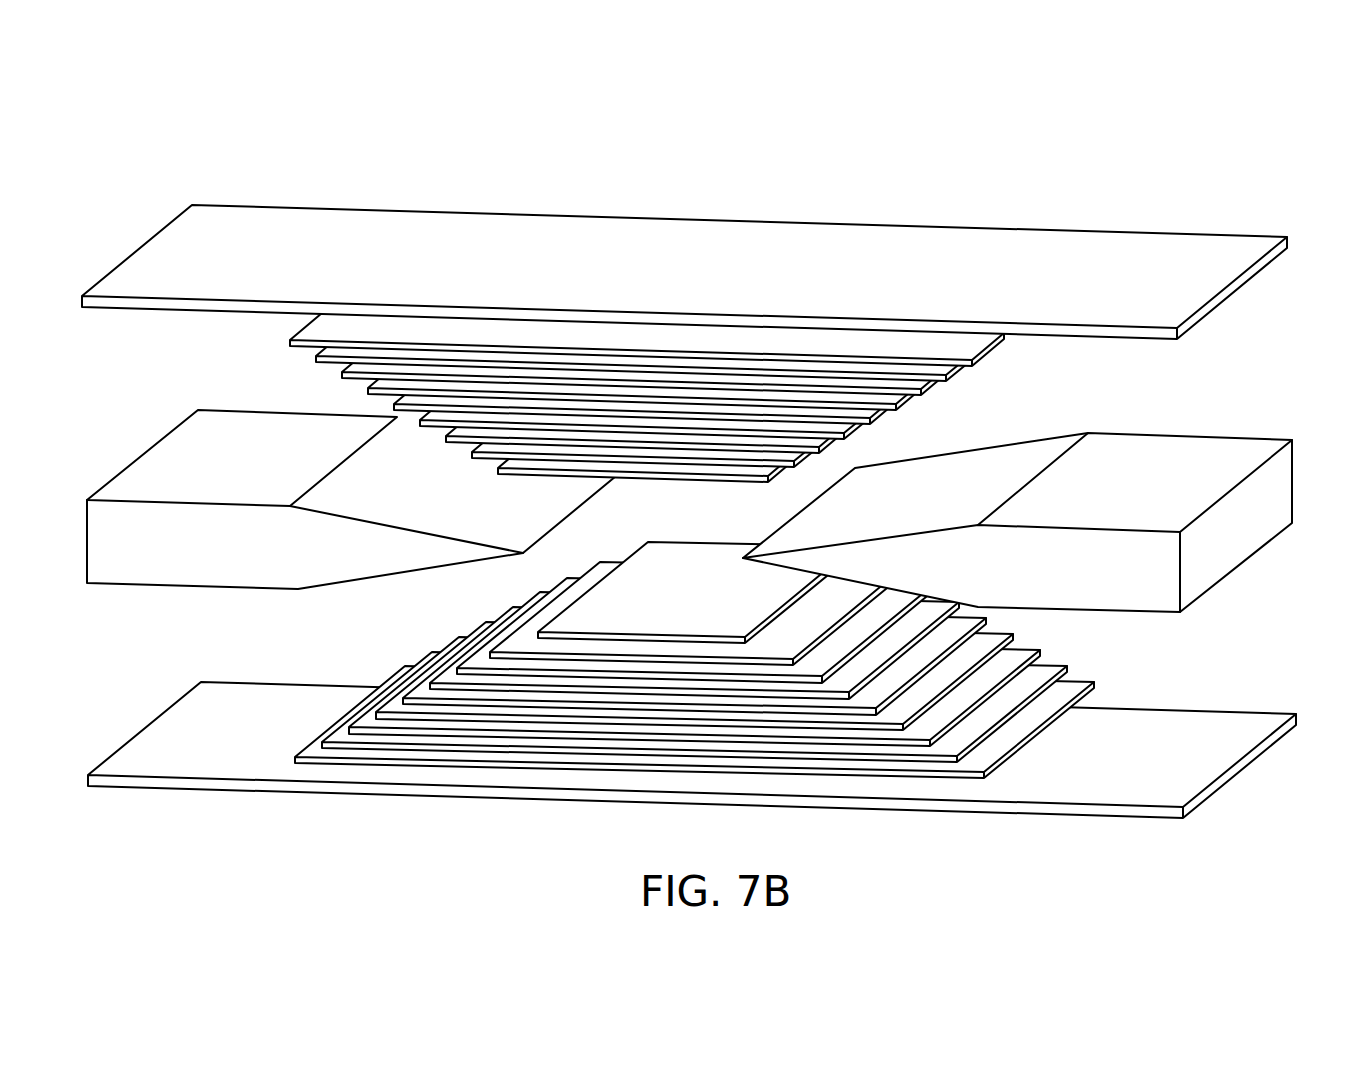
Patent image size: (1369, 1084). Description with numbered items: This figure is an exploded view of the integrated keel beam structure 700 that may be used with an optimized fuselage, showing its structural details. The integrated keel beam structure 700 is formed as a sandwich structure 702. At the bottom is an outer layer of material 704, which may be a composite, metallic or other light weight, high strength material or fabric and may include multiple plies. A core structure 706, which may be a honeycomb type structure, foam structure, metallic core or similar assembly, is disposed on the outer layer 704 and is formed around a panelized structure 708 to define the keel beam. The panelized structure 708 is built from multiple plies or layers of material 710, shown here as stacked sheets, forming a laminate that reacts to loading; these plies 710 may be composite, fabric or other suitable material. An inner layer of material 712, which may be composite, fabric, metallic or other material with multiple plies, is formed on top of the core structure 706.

The integrated keel beam structure 700 is at (724, 472).
The sandwich structure 702 is at (727, 506).
The outer layer of material 704 is at (1127, 810).
The core structure 706 is at (1247, 549).
The panelized structure 708 is at (751, 660).
The plies or layers of material 710 is at (1087, 682).
The inner layer of material 712 is at (1140, 242).